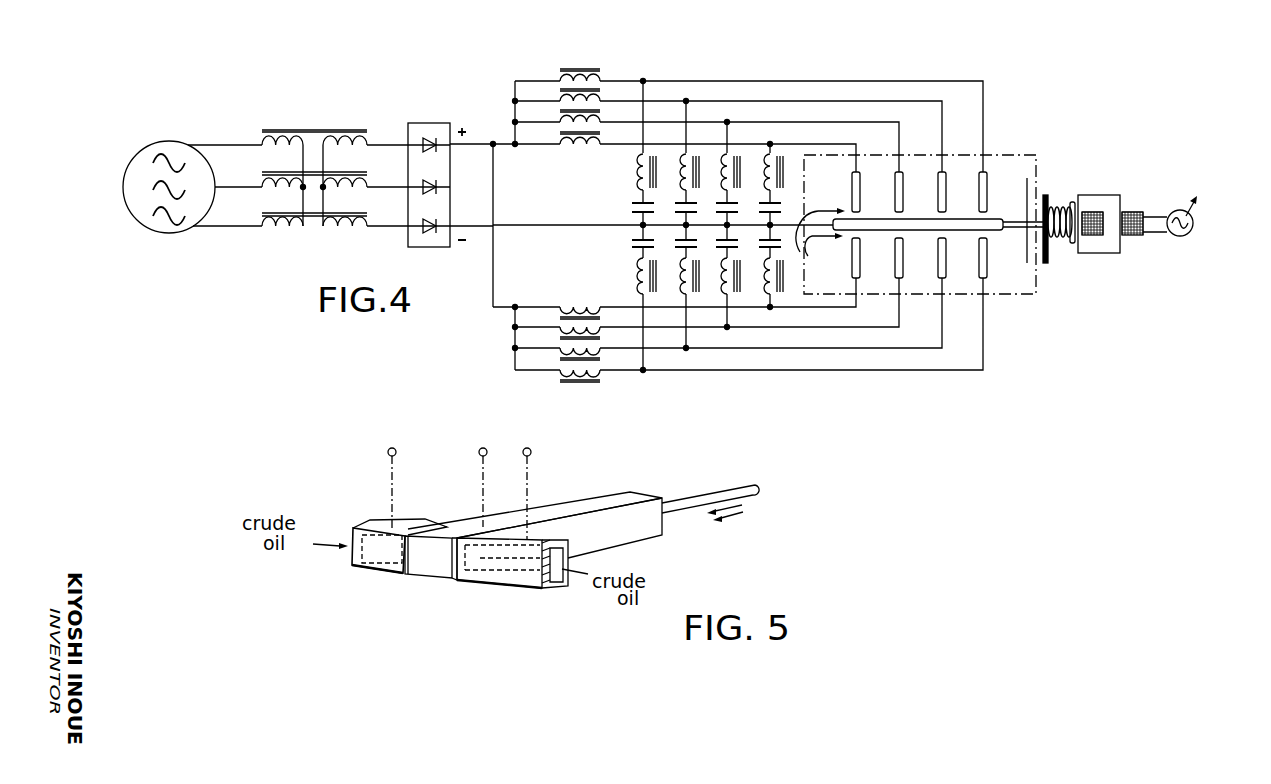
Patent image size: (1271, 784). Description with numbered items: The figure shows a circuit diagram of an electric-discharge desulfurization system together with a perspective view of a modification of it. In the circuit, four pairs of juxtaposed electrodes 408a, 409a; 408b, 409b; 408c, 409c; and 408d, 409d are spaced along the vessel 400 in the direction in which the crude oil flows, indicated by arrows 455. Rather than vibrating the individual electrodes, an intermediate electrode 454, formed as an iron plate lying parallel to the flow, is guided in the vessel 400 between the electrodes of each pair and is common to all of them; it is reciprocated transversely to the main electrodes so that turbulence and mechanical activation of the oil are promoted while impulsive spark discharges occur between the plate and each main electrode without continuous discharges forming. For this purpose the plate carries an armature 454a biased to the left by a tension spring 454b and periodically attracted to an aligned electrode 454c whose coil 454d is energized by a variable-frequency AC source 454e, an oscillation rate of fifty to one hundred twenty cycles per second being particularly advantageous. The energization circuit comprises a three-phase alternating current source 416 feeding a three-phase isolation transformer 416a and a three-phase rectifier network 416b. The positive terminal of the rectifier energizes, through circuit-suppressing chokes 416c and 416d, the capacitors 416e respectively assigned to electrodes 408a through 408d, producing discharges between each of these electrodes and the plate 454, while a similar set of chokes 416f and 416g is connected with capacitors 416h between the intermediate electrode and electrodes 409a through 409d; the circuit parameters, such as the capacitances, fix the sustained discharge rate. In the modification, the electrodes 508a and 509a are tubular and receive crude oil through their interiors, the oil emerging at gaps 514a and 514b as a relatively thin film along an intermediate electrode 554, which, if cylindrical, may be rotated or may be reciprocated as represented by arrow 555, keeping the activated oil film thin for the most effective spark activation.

In FIG. 4, the vessel 400 is at (1017, 295).
In FIG. 4, the electrode 408a is at (858, 173).
In FIG. 4, the electrode 408b is at (902, 182).
In FIG. 4, the electrode 408c is at (947, 177).
In FIG. 4, the electrode 408d is at (985, 177).
In FIG. 4, the electrode 409a is at (858, 279).
In FIG. 4, the electrode 409b is at (902, 279).
In FIG. 4, the electrode 409c is at (940, 279).
In FIG. 4, the electrode 409d is at (985, 279).
In FIG. 4, the three-phase alternating current source 416 is at (168, 233).
In FIG. 4, the three-phase isolation transformer 416a is at (282, 133).
In FIG. 4, the three-phase rectifier network 416b is at (415, 122).
In FIG. 4, the circuit-suppressing choke 416c is at (573, 77).
In FIG. 4, the circuit-suppressing choke 416d is at (645, 168).
In FIG. 4, the capacitor 416e is at (637, 203).
In FIG. 4, the choke 416f is at (600, 382).
In FIG. 4, the choke 416g is at (697, 303).
In FIG. 4, the capacitor 416h is at (635, 242).
In FIG. 4, the intermediate electrode 454 is at (1000, 231).
In FIG. 4, the armature 454a is at (1047, 197).
In FIG. 4, the tension spring 454b is at (1060, 243).
In FIG. 4, the electrode 454c is at (1115, 198).
In FIG. 4, the coil 454d is at (1138, 237).
In FIG. 4, the variable-frequency AC source 454e is at (1170, 238).
In FIG. 4, the arrows 455 is at (821, 239).
In FIG. 5, the tubular electrode 508a is at (350, 565).
In FIG. 5, the tubular electrode 509a is at (512, 583).
In FIG. 5, the gap 514a is at (412, 585).
In FIG. 5, the gap 514b is at (450, 593).
In FIG. 5, the intermediate electrode 554 is at (653, 537).
In FIG. 5, the arrow 555 is at (733, 515).